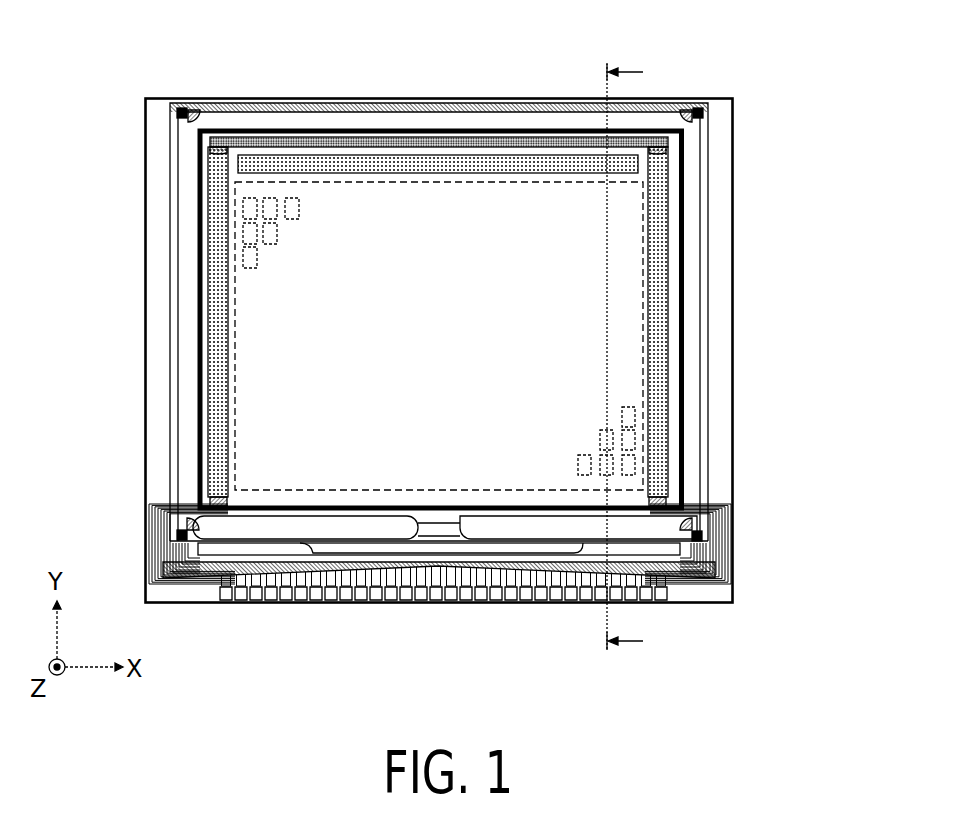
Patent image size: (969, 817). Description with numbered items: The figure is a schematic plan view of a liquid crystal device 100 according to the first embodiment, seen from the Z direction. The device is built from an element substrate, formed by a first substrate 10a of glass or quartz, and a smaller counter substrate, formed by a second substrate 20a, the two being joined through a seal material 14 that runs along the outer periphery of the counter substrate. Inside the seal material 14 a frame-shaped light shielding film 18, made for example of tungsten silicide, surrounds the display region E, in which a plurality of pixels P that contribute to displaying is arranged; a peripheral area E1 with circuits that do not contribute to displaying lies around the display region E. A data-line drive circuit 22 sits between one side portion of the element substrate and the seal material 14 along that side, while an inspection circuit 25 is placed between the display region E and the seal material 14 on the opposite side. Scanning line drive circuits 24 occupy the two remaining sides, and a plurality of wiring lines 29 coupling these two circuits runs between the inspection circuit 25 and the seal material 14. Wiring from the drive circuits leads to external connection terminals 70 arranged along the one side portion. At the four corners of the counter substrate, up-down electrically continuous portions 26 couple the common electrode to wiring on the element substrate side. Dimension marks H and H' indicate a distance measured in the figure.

The liquid crystal device 100 is at (779, 27).
The first substrate 10a is at (255, 98).
The second substrate 20a is at (295, 108).
The seal material 14 is at (690, 223).
The light shielding film 18 is at (318, 492).
The data-line drive circuit 22 is at (213, 549).
The scanning line drive circuit 24 is at (225, 337).
The inspection circuit 25 is at (488, 163).
The up-down electrically continuous portion 26 is at (178, 113).
The wiring lines 29 is at (407, 137).
The external connection terminals 70 is at (318, 592).
The display region E is at (565, 190).
The peripheral area E1 is at (233, 160).
The pixel P is at (258, 262).
The distance H is at (637, 359).
The distance H' is at (640, 73).